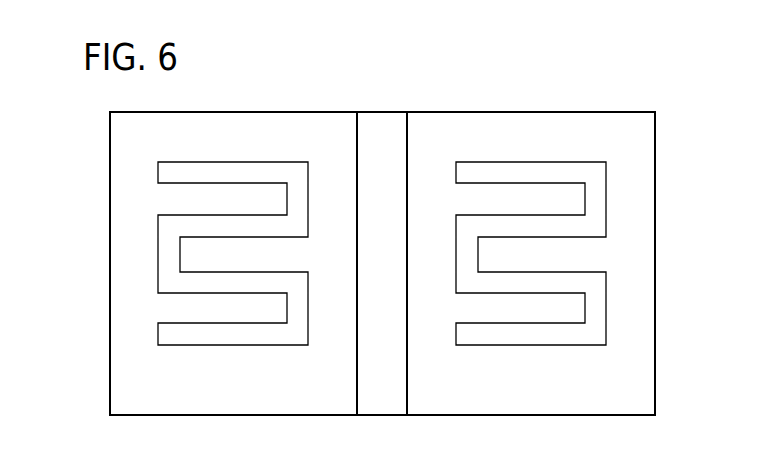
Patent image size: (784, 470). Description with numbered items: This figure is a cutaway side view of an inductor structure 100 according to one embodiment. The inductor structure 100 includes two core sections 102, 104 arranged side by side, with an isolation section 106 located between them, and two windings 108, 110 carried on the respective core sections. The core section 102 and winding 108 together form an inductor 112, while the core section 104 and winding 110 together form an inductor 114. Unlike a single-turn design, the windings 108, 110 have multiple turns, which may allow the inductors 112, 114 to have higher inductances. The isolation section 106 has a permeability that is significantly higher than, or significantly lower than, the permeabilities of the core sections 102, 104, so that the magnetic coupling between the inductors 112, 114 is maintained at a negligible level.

The inductor structure 100 is at (480, 76).
The core section 102 is at (222, 112).
The core section 104 is at (540, 112).
The isolation section 106 is at (375, 112).
The winding 108 is at (243, 162).
The winding 110 is at (530, 162).
The inductor 112 is at (90, 215).
The inductor 114 is at (673, 215).